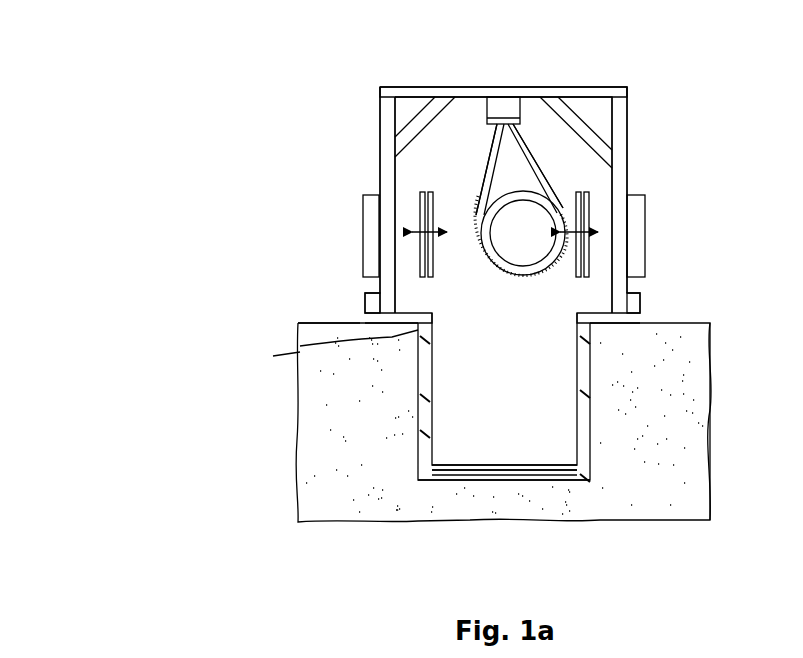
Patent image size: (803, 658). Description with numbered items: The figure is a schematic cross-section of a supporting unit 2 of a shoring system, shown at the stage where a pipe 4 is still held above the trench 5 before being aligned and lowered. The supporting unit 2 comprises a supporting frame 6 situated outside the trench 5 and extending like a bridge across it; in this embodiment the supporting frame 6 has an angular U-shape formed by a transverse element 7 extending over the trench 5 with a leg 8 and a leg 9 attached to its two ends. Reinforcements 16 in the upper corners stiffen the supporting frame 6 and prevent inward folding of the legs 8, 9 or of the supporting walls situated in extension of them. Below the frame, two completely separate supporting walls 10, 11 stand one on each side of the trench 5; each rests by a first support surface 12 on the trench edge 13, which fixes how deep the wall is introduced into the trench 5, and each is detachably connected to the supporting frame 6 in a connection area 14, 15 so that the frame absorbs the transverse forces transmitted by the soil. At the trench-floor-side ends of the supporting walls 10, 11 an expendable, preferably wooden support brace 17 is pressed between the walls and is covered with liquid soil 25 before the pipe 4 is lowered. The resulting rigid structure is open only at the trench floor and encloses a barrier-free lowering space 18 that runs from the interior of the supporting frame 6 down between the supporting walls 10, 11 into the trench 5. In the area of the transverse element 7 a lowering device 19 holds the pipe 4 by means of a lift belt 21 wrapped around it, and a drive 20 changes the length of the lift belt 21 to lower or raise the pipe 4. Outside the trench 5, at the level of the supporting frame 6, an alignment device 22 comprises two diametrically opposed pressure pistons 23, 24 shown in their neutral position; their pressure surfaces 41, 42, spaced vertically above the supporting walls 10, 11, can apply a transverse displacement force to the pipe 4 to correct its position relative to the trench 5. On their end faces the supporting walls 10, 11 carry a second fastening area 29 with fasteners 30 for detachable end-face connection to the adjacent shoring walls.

The supporting unit 2 is at (236, 102).
The pipe 4 is at (511, 248).
The trench 5 is at (557, 447).
The supporting frame 6 is at (634, 110).
The transverse element 7 is at (533, 88).
The leg 8 is at (386, 157).
The leg 9 is at (620, 148).
The supporting wall 10 is at (410, 428).
The supporting wall 11 is at (588, 393).
The first support surface 12 is at (265, 357).
The trench edge 13 is at (356, 325).
The connection area 14 is at (375, 309).
The connection area 15 is at (633, 303).
The reinforcements 16 is at (382, 93).
The support brace 17 is at (506, 470).
The barrier-free lowering space 18 is at (490, 324).
The lowering device 19 is at (483, 126).
The drive 20 is at (503, 108).
The lift belt 21 is at (479, 136).
The alignment device 22 is at (660, 240).
The pressure piston 23 is at (600, 229).
The pressure piston 24 is at (412, 232).
The liquid soil 25 is at (467, 481).
The second fastening area 29 is at (578, 370).
The fasteners 30 is at (440, 464).
The pressure surface 41 is at (572, 202).
The pressure surface 42 is at (487, 177).